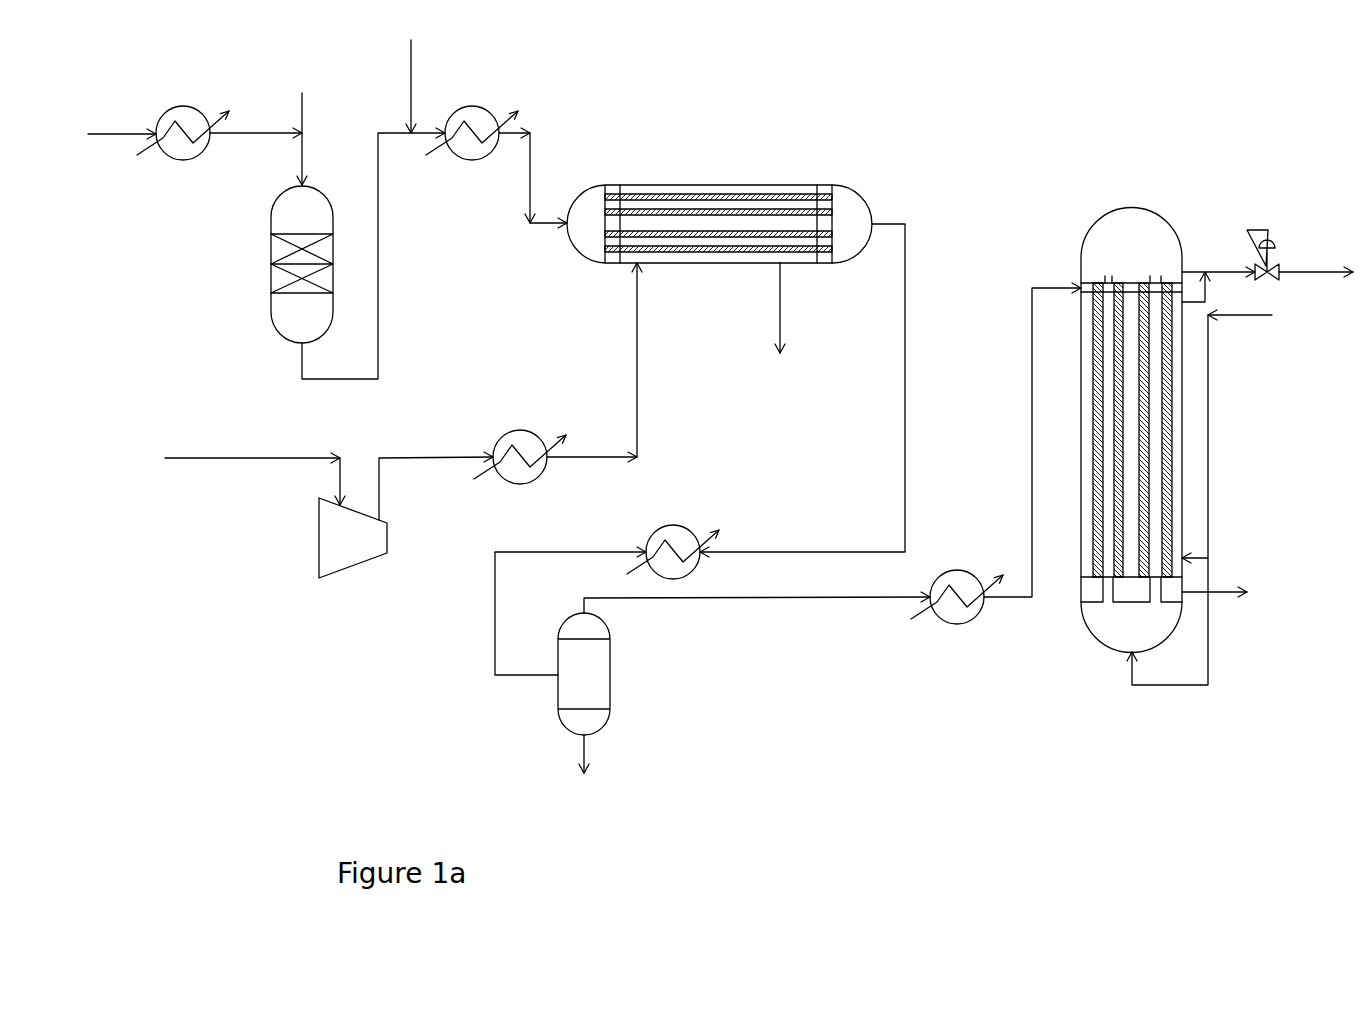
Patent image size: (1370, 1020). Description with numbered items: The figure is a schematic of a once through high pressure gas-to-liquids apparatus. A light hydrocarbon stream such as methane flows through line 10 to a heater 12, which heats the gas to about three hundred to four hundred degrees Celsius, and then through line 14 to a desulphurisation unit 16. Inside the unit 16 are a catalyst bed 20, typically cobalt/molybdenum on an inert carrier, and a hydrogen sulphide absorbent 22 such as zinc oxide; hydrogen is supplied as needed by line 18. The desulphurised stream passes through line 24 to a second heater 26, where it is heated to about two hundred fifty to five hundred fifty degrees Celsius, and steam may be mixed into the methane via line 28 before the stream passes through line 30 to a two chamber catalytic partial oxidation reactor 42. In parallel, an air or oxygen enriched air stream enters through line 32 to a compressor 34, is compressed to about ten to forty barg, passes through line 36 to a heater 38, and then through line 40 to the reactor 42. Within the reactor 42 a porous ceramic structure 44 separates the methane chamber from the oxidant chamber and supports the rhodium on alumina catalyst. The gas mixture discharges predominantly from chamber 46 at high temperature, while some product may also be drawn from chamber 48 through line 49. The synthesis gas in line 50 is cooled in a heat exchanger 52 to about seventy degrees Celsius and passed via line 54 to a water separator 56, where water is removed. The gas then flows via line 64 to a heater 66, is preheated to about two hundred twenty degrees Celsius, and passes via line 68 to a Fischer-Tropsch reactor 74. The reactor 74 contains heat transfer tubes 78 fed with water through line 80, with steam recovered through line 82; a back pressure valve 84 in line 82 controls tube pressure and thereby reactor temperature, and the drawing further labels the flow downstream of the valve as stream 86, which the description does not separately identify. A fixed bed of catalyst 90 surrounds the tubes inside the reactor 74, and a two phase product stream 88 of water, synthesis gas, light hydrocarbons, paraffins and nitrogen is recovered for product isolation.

The line 10 is at (121, 131).
The heater 12 is at (196, 153).
The line 14 is at (244, 133).
The desulphurisation unit 16 is at (350, 188).
The line 18 is at (304, 100).
The catalyst bed 20 is at (270, 254).
The hydrogen sulphide absorbent 22 is at (272, 284).
The line 24 is at (368, 378).
The second heater 26 is at (490, 156).
The line 28 is at (412, 70).
The line 30 is at (532, 174).
The line 32 is at (268, 458).
The compressor 34 is at (364, 565).
The line 36 is at (452, 460).
The heater 38 is at (536, 475).
The line 40 is at (635, 412).
The catalytic partial oxidation reactor 42 is at (652, 181).
The porous ceramic structure 44 is at (768, 190).
The chamber 46 is at (802, 385).
The chamber 48 is at (812, 263).
The line 49 is at (797, 327).
The line 50 is at (810, 556).
The heat exchanger 52 is at (673, 536).
The line 54 is at (577, 556).
The water separator 56 is at (612, 672).
The line 64 is at (810, 615).
The heater 66 is at (974, 624).
The line 68 is at (1032, 444).
The Fischer-Tropsch reactor 74 is at (1096, 224).
The heat transfer tubes 78 is at (1092, 572).
The line 80 is at (1210, 350).
The line 82 is at (1224, 273).
The back pressure valve 84 is at (1268, 230).
The product outlet stream 86 is at (1302, 276).
The two phase product stream 88 is at (1216, 604).
The fixed bed of catalyst 90 is at (1168, 482).